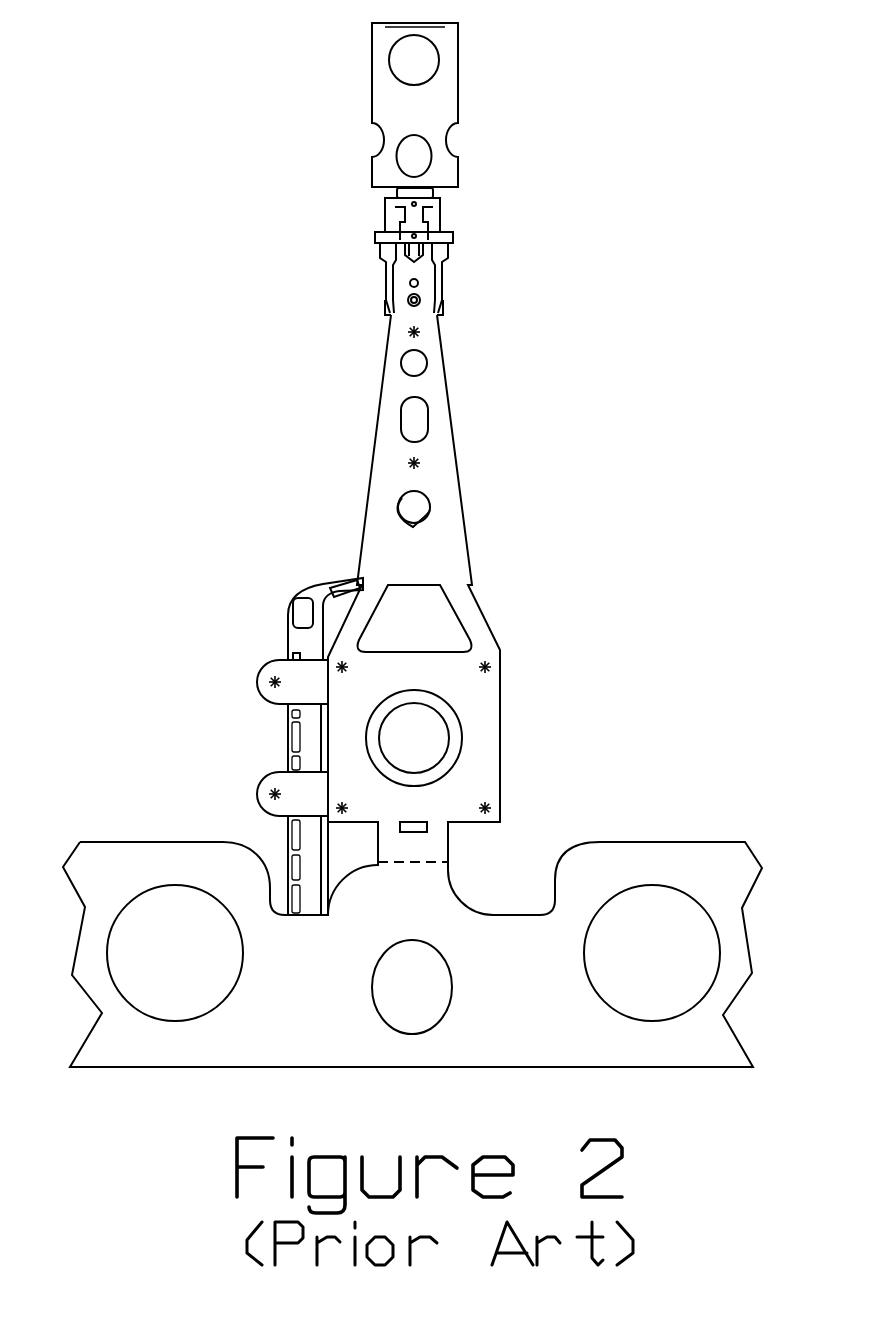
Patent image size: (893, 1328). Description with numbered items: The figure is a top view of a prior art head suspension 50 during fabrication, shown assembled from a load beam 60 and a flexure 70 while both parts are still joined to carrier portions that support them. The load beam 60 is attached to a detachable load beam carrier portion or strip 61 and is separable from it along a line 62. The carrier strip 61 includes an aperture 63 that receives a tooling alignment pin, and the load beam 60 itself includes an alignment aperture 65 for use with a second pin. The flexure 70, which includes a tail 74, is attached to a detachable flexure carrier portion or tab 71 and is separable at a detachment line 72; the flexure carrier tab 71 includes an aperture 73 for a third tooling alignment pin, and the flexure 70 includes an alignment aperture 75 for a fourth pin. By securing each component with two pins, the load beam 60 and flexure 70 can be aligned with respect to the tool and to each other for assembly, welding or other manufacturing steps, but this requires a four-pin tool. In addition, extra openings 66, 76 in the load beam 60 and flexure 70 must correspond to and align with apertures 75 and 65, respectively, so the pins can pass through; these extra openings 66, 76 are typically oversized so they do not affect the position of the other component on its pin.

The head suspension 50 is at (155, 148).
The load beam 60 is at (472, 577).
The load beam carrier portion or strip 61 is at (620, 857).
The line 62 is at (440, 840).
The aperture 63 is at (445, 962).
The alignment aperture 65 is at (415, 413).
The extra opening 66 is at (415, 522).
The flexure 70 is at (385, 278).
The flexure carrier portion or tab 71 is at (448, 92).
The detachment line 72 is at (438, 195).
The aperture 73 is at (425, 87).
The tail 74 is at (293, 733).
The alignment aperture 75 is at (408, 507).
The extra opening 76 is at (400, 435).